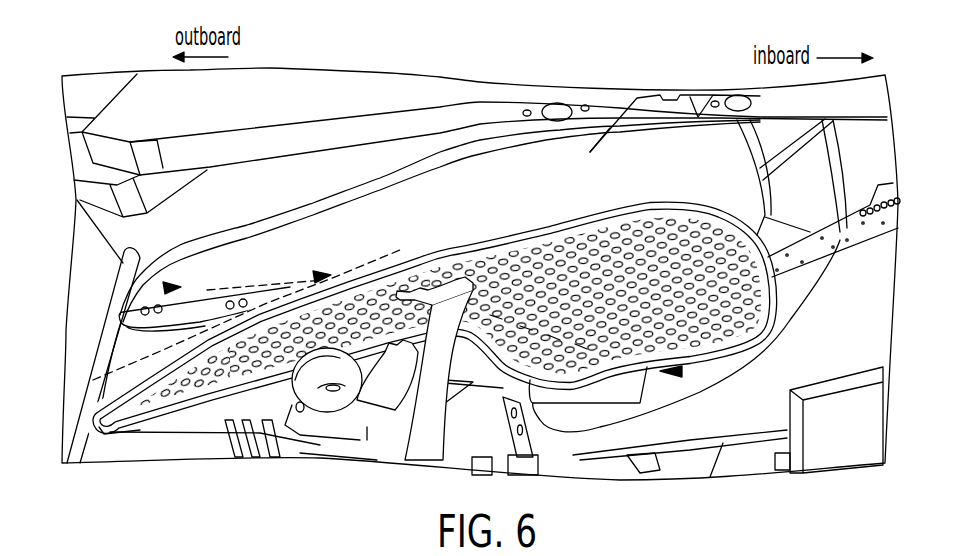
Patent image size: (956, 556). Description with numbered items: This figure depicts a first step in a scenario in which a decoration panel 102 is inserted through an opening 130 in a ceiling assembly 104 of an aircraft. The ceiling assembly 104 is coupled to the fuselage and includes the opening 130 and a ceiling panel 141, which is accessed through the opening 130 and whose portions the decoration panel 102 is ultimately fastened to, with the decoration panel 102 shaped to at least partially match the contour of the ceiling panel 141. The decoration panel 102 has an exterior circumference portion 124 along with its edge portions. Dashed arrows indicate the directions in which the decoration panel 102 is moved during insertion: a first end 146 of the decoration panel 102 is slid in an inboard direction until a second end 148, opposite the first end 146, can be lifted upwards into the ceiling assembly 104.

The decoration panel 102 is at (735, 283).
The ceiling assembly 104 is at (392, 155).
The exterior circumference portion 124 is at (233, 220).
The opening 130 is at (127, 320).
The ceiling panel 141 is at (468, 175).
The first end 146 is at (678, 333).
The second end 148 is at (118, 415).